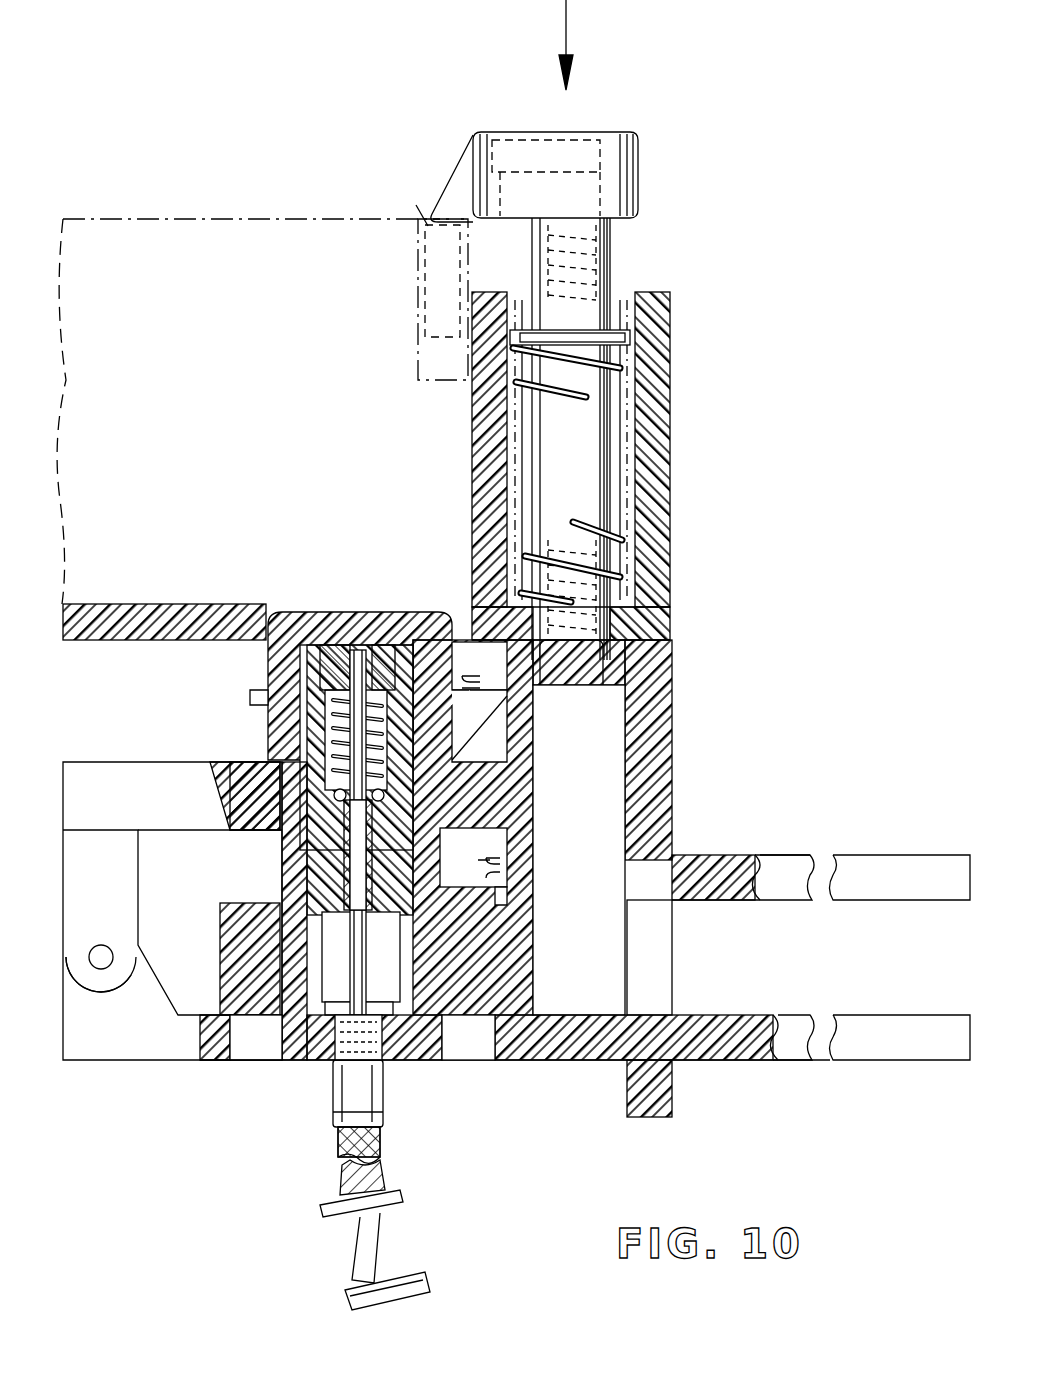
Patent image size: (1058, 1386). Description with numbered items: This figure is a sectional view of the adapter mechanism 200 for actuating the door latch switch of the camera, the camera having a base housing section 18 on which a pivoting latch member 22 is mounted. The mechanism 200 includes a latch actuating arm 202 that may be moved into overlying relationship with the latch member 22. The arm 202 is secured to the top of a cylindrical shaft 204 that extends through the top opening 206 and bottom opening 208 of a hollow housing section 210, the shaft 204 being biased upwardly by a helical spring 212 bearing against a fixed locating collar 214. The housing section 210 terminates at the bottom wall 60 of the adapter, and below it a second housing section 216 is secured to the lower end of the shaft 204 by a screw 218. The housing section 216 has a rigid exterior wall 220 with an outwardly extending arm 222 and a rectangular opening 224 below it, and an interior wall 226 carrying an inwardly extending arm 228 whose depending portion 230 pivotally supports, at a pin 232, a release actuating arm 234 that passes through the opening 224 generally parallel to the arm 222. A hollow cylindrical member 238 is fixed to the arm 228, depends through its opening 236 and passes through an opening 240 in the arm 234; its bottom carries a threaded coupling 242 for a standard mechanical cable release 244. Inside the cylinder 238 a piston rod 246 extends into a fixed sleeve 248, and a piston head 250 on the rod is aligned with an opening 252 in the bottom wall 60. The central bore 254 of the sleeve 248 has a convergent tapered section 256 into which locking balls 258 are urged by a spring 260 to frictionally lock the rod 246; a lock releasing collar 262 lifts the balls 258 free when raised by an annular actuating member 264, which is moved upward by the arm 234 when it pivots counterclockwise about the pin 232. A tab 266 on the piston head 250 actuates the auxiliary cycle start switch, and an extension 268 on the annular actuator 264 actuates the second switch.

The base housing section 18 is at (220, 226).
The latch member 22 is at (428, 230).
The bottom wall 60 is at (170, 645).
The mechanism 200 is at (581, 422).
The latch actuating arm 202 is at (470, 178).
The cylindrical shaft 204 is at (610, 250).
The top opening 206 is at (608, 298).
The bottom opening 208 is at (672, 612).
The hollow housing section 210 is at (672, 452).
The helical spring 212 is at (578, 522).
The locating collar 214 is at (630, 338).
The second housing section 216 is at (586, 827).
The screw 218 is at (575, 720).
The exterior wall 220 is at (672, 795).
The arm 222 is at (737, 860).
The rectangular opening 224 is at (672, 982).
The interior wall 226 is at (527, 746).
The inwardly extending arm 228 is at (215, 775).
The vertically depending portion 230 is at (125, 870).
The pin 232 is at (110, 955).
The release actuating arm 234 is at (566, 1050).
The opening 236 is at (282, 850).
The hollow cylindrical member 238 is at (345, 870).
The opening 240 is at (472, 1048).
The threaded coupling 242 is at (346, 1066).
The mechanical cable release 244 is at (382, 1143).
The piston rod 246 is at (340, 1010).
The fixed sleeve 248 is at (315, 746).
The piston head 250 is at (270, 668).
The opening 252 is at (336, 665).
The central bore 254 is at (378, 645).
The convergent tapered section 256 is at (260, 812).
The locking balls 258 is at (482, 856).
The spring 260 is at (330, 722).
The lock releasing collar 262 is at (340, 888).
The annular actuating member 264 is at (235, 985).
The tab 266 is at (482, 685).
The extension 268 is at (507, 900).